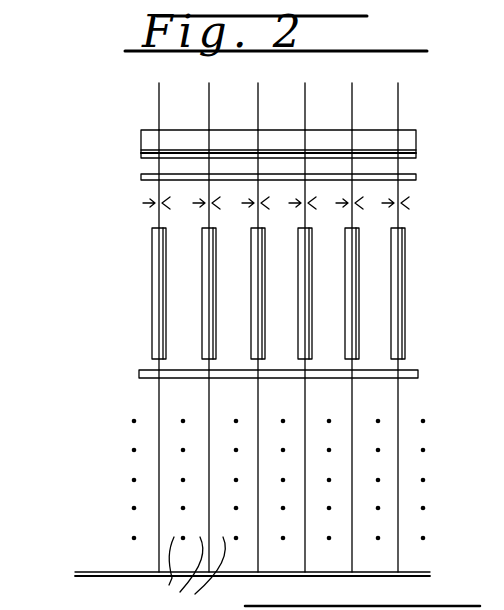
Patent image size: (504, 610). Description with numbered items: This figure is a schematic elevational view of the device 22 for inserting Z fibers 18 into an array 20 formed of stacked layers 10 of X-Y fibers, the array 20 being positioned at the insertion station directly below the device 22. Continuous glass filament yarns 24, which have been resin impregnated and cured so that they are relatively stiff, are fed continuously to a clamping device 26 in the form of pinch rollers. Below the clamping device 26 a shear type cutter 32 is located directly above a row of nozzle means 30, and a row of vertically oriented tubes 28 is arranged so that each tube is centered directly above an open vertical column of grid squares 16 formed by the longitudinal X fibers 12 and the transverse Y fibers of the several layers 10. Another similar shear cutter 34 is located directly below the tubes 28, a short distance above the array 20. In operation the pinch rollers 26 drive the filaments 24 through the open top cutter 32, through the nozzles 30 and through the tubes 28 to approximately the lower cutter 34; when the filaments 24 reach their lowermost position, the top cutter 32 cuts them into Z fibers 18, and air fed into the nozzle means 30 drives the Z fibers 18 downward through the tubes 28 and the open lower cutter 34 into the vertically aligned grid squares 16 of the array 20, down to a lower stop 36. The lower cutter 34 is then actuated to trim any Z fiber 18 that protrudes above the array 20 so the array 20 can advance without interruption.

The layers of X-Y fibers 10 is at (123, 453).
The longitudinal X fibers 12 is at (181, 421).
The grid squares 16 is at (185, 573).
The Z fibers 18 is at (207, 324).
The array 20 is at (269, 508).
The device for inserting Z threads 22 is at (256, 258).
The glass filament yarns 24 is at (352, 97).
The clamping device 26 is at (141, 145).
The tubes 28 is at (202, 257).
The nozzle means 30 is at (143, 203).
The shear type cutter 32 is at (141, 180).
The lower shear cutter 34 is at (139, 374).
The lower stop 36 is at (99, 567).